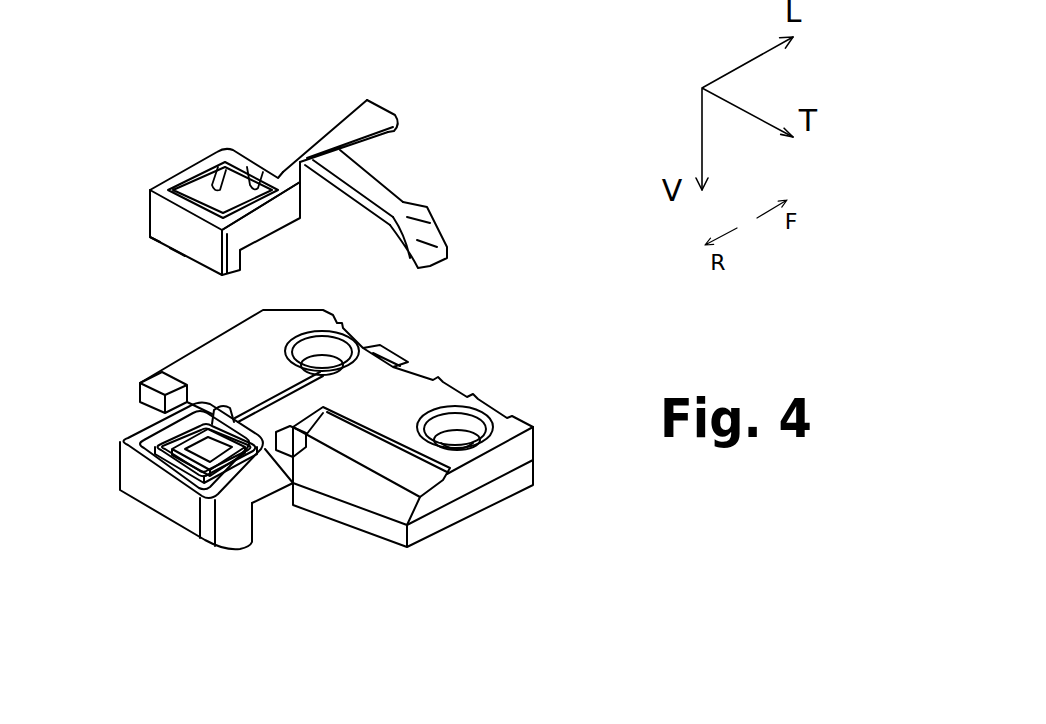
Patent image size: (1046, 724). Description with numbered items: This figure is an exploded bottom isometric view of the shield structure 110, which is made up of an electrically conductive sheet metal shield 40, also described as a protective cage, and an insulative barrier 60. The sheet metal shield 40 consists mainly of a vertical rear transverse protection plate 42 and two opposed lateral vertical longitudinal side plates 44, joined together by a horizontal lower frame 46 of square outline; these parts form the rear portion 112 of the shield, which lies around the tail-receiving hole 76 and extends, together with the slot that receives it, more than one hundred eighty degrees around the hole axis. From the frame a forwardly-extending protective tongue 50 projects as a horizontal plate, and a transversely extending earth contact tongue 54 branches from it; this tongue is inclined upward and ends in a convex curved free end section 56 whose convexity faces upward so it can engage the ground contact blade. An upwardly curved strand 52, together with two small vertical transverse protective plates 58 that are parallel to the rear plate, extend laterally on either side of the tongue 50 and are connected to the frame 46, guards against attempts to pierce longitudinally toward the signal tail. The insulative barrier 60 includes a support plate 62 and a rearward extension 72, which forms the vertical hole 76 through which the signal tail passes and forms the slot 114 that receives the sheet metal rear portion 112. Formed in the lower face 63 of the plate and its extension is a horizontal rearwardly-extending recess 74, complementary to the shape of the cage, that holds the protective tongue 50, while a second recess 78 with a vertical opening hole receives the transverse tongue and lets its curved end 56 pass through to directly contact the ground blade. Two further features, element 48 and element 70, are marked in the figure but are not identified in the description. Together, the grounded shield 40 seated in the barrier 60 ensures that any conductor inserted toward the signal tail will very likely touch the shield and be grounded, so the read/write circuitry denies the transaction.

The sheet metal shield 40 is at (525, 183).
The rear protection plate 42 is at (160, 227).
The side plates 44 is at (213, 192).
The horizontal lower frame 46 is at (177, 183).
The connecting portion 48 is at (566, 8).
The forwardly-extending protective tongue 50 is at (315, 141).
The upwardly curved strand 52 is at (388, 130).
The transversely extending tongue 54 is at (395, 210).
The convex curved free end section 56 is at (413, 262).
The small vertical transverse protective plates 58 is at (258, 187).
The insulative barrier 60 is at (142, 527).
The support plate 62 is at (550, 468).
The lower face 63 is at (508, 450).
The plate front portion 70 is at (372, 522).
The rearward extension 72 is at (276, 500).
The rearwardly-extending recess 74 is at (266, 382).
The tail-receiving hole 76 is at (209, 437).
The recess 78 is at (410, 470).
The shield structure 110 is at (150, 244).
The rear portion 112 is at (177, 253).
The slot 114 is at (165, 430).